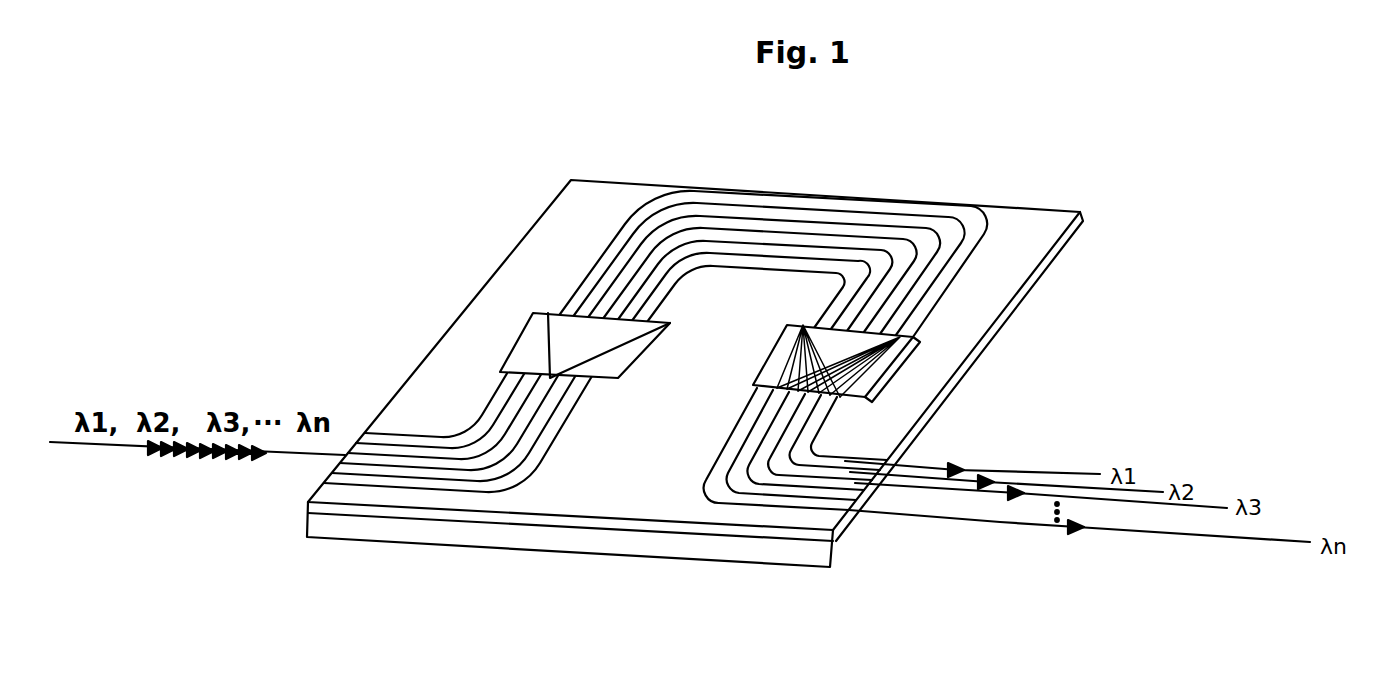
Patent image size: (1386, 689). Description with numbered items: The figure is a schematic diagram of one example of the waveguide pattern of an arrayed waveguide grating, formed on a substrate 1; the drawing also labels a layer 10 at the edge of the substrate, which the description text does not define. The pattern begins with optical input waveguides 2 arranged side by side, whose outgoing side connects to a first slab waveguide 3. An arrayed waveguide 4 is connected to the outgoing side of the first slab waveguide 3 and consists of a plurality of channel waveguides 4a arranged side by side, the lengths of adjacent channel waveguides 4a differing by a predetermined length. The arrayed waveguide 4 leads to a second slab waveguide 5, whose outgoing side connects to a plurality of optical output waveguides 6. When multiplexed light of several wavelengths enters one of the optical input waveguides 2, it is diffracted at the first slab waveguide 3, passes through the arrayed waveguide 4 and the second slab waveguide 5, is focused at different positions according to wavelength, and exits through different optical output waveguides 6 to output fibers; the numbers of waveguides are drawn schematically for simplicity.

The substrate 1 is at (1067, 245).
The waveguide layer 10 is at (1077, 230).
The optical input waveguides 2 is at (370, 555).
The first slab waveguide 3 is at (523, 333).
The arrayed waveguide 4 is at (802, 291).
The channel waveguides 4a is at (785, 271).
The second slab waveguide 5 is at (922, 352).
The optical output waveguides 6 is at (840, 455).